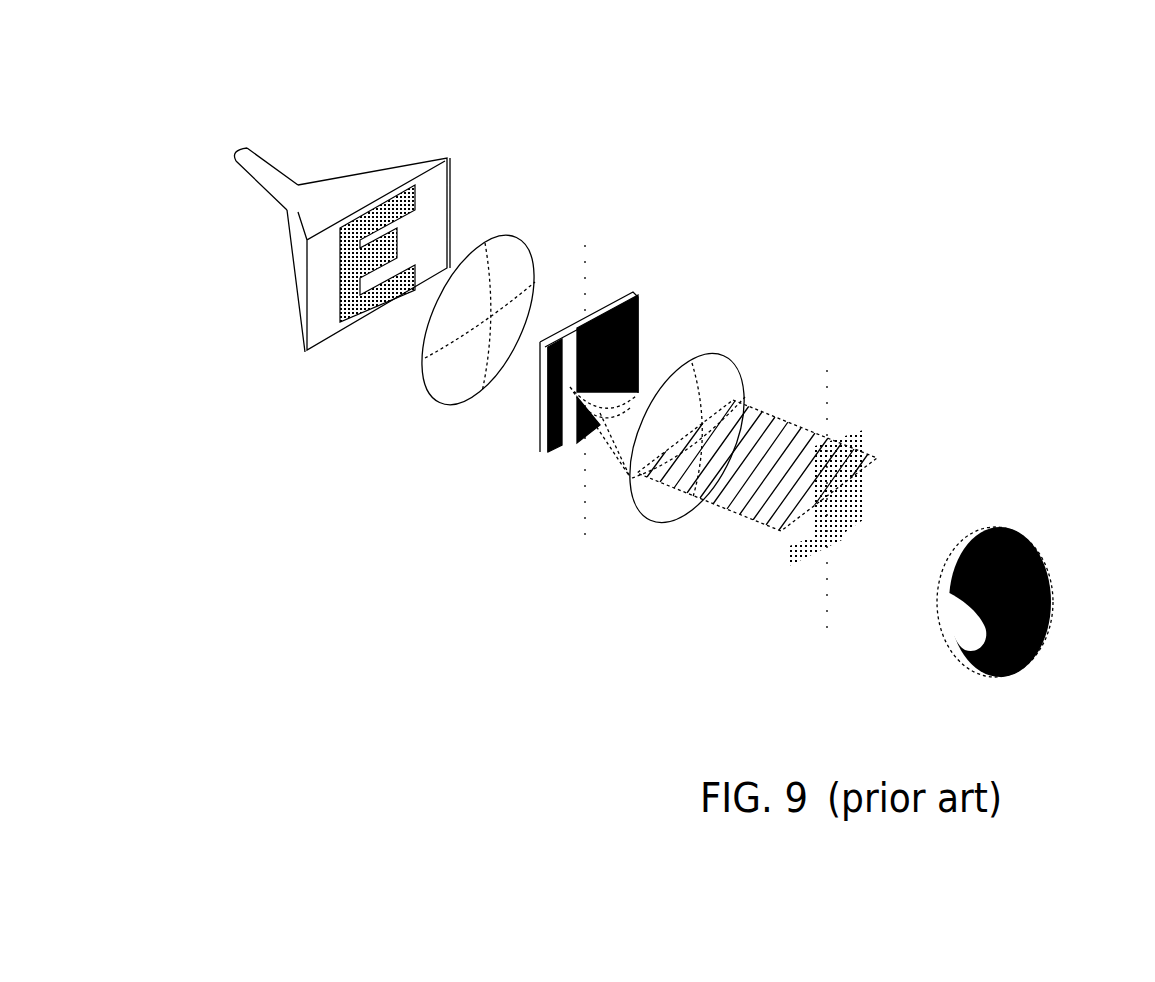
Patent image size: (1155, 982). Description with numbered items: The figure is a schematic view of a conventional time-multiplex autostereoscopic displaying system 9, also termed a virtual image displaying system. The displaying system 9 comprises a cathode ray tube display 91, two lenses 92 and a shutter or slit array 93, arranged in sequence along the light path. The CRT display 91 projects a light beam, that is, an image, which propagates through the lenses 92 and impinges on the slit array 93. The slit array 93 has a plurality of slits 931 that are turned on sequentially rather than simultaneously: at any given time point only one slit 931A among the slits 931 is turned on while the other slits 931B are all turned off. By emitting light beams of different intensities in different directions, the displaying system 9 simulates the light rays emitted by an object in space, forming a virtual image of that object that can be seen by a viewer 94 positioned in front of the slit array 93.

The displaying system 9 is at (212, 78).
The cathode ray tube display 91 is at (289, 322).
The lenses 92 is at (531, 247).
The slit array 93 is at (574, 425).
The slits 931 is at (505, 477).
The turned-on slit 931A is at (567, 431).
The turned-off slits 931B is at (548, 391).
The viewer 94 is at (1028, 524).